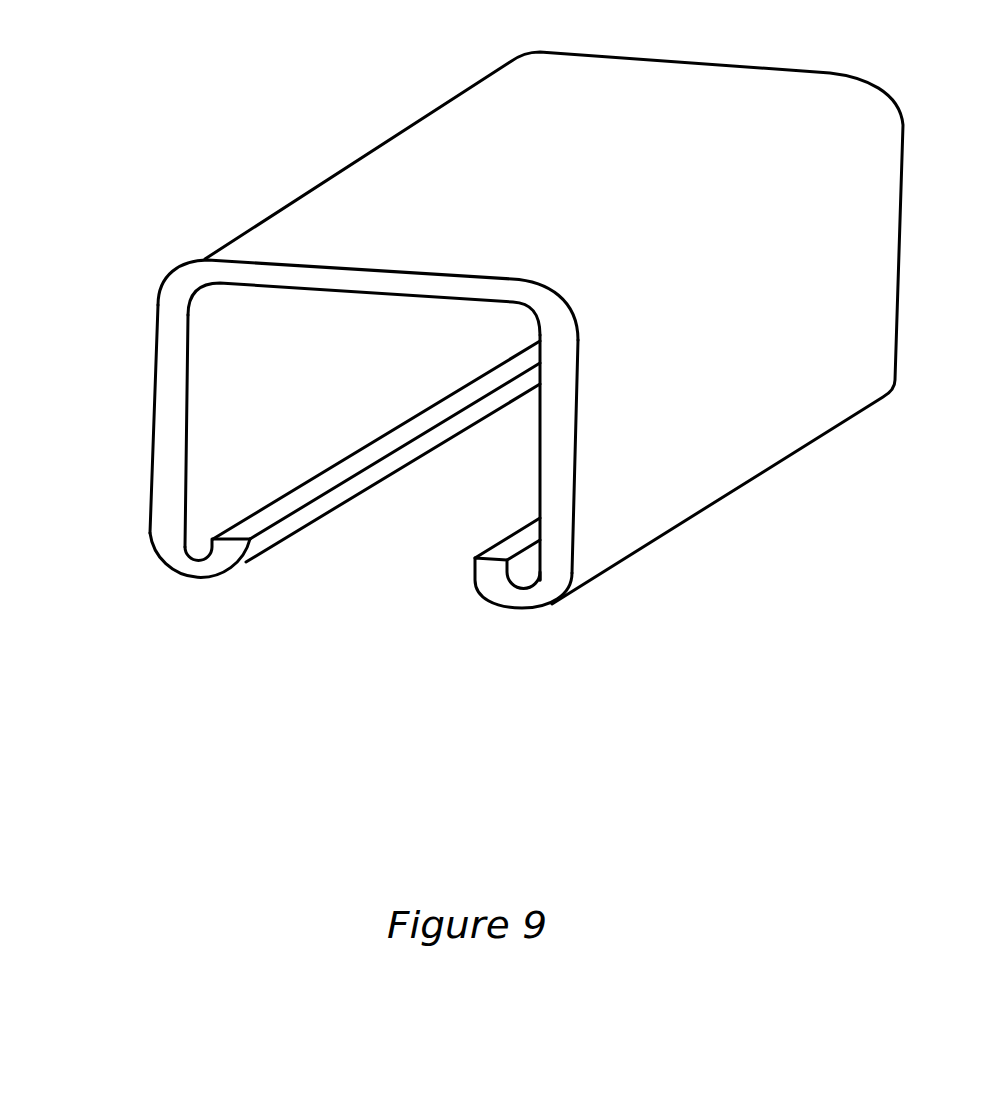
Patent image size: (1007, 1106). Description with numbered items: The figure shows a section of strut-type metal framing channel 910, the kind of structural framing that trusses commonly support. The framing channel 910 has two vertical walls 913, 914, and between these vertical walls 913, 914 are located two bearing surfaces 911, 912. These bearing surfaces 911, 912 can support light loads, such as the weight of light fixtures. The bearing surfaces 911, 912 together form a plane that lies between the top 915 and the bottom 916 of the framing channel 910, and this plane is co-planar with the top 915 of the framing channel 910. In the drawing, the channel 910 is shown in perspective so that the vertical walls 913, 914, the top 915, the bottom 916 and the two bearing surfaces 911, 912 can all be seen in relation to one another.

The strut-type metal framing channel 910 is at (474, 82).
The bearing surface 911 is at (250, 523).
The bearing surface 912 is at (510, 545).
The vertical wall 913 is at (172, 363).
The vertical wall 914 is at (555, 442).
The top 915 is at (380, 270).
The bottom 916 is at (187, 585).